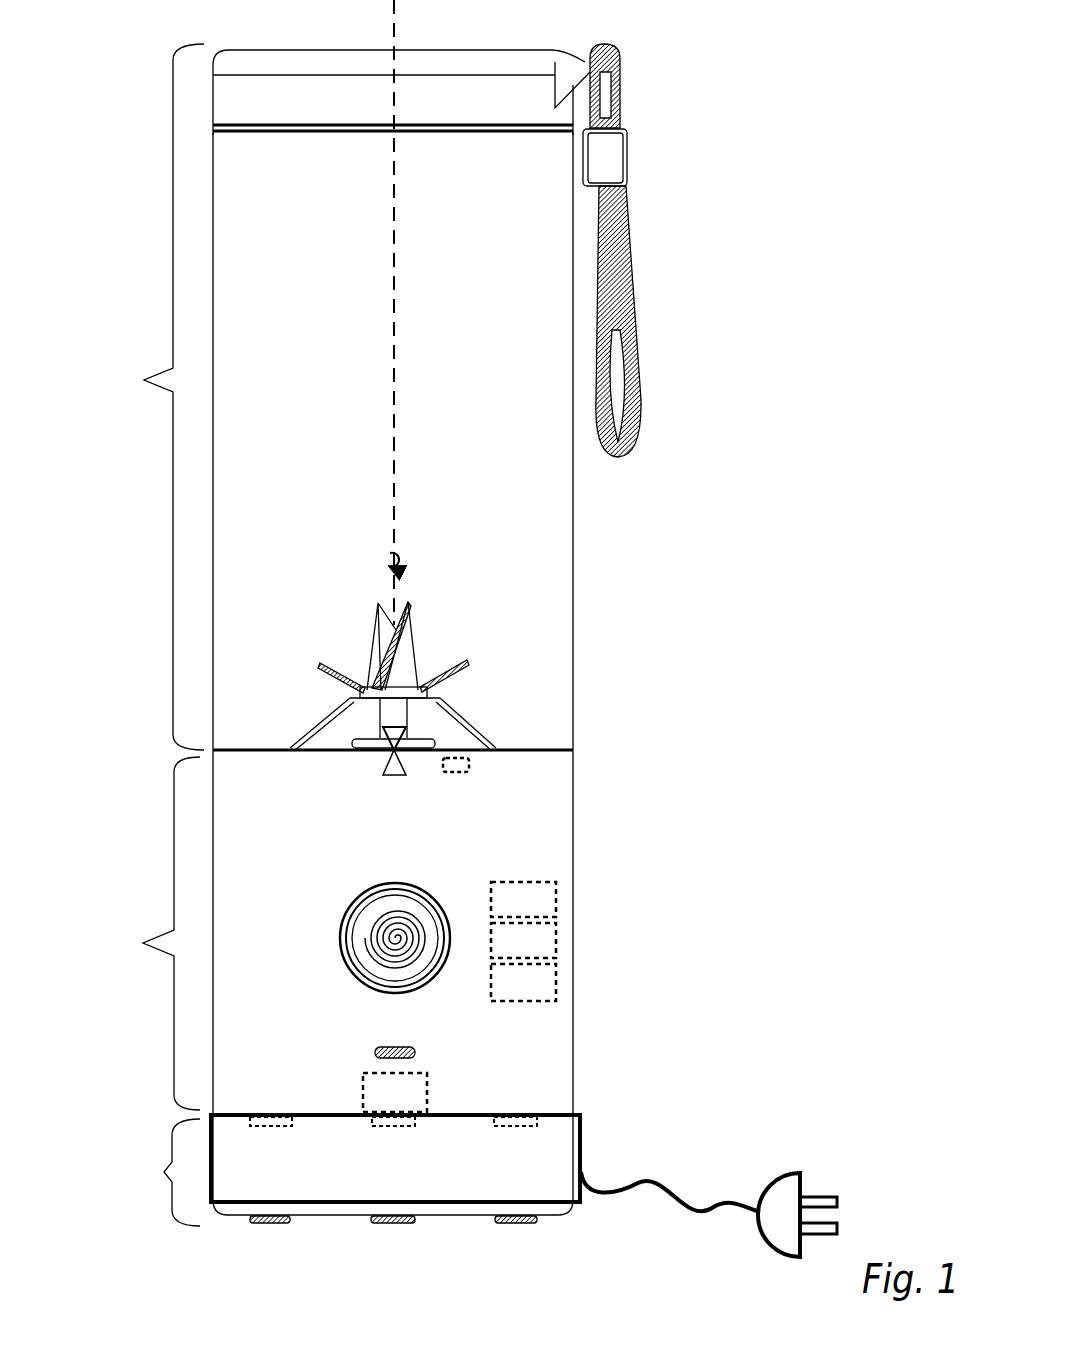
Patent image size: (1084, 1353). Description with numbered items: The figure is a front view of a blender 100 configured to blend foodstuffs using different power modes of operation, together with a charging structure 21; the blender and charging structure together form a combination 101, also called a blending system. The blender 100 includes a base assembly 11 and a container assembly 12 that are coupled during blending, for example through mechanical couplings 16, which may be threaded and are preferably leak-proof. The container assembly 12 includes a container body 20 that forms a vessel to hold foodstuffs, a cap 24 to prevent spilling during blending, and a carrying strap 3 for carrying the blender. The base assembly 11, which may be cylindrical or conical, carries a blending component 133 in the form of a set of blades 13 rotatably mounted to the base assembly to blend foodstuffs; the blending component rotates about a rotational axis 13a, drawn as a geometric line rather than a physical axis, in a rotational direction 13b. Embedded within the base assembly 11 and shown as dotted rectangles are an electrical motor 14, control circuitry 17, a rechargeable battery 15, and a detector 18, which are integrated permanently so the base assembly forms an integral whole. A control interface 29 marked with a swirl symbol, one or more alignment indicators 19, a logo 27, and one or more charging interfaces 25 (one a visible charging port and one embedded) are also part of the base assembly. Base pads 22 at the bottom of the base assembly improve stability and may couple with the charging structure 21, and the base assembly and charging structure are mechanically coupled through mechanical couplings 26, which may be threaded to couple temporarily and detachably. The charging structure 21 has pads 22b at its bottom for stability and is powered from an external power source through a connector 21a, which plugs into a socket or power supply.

The blender 100 is at (730, 74).
The combination 101 is at (166, 50).
The container assembly 12 is at (138, 397).
The base assembly 11 is at (137, 933).
The cap 24 is at (427, 53).
The container body 20 is at (530, 492).
The carrying strap 3 is at (641, 440).
The rotational axis 13a is at (398, 528).
The rotational direction 13b is at (404, 562).
The blending component 133 is at (592, 676).
The set of blades 13 is at (468, 662).
The mechanical couplings 16 is at (578, 752).
The detector 18 is at (468, 774).
The alignment indicators 19 is at (402, 775).
The logo 27 is at (484, 838).
The electrical motor 14 is at (556, 893).
The control circuitry 17 is at (556, 935).
The rechargeable battery 15 is at (556, 978).
The control interface 29 is at (425, 985).
The charging interfaces 25 is at (393, 1103).
The mechanical couplings 26 is at (596, 1120).
The base pads 22 is at (494, 1126).
The charging structure 21 is at (311, 1170).
The pads 22b is at (495, 1223).
The connector 21a is at (763, 1213).